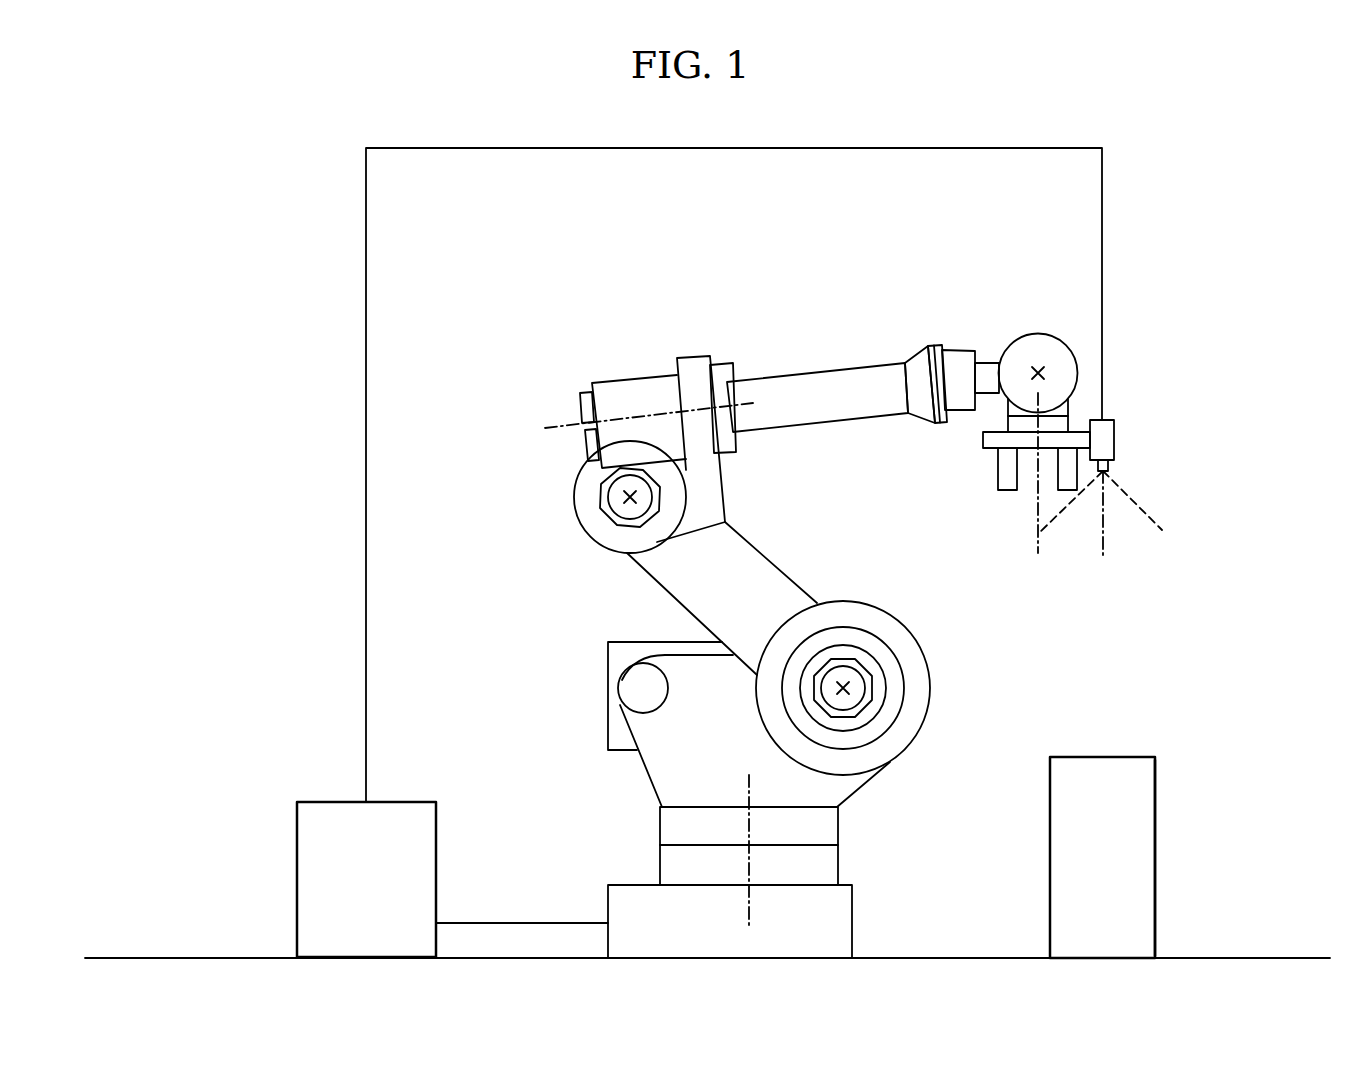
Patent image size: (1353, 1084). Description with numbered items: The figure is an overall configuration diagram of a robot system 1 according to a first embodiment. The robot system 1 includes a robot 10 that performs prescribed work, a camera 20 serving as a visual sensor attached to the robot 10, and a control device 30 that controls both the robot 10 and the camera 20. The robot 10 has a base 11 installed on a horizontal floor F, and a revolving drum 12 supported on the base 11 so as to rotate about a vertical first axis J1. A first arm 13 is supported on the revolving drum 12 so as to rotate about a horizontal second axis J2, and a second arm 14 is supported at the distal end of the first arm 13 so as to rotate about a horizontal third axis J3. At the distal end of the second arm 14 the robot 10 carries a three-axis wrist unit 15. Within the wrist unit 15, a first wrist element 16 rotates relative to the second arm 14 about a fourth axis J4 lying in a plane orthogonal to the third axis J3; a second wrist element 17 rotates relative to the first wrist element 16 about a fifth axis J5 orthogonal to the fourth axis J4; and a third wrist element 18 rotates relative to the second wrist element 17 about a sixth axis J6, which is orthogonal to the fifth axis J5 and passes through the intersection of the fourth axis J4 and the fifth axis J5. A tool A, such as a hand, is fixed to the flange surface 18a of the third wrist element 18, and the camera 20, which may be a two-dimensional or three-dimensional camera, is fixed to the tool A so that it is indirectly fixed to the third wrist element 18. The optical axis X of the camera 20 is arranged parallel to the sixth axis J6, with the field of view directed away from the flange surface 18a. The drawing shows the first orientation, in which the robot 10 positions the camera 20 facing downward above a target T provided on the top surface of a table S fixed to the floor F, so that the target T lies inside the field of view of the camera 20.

The robot system 1 is at (1150, 311).
The robot 10 is at (486, 296).
The base 11 is at (852, 918).
The revolving drum 12 is at (620, 728).
The first arm 13 is at (790, 572).
The second arm 14 is at (695, 358).
The wrist unit 15 is at (903, 294).
The first wrist element 16 is at (815, 370).
The second wrist element 17 is at (1012, 338).
The third wrist element 18 is at (1070, 425).
The flange surface 18a is at (1025, 433).
The camera 20 is at (1114, 437).
The control device 30 is at (297, 873).
The first axis J1 is at (750, 831).
The second axis J2 is at (843, 688).
The third axis J3 is at (630, 497).
The fourth axis J4 is at (631, 425).
The fifth axis J5 is at (1038, 372).
The sixth axis J6 is at (1035, 492).
The tool A is at (983, 435).
The optical axis X is at (1103, 542).
The target T is at (1097, 757).
The table S is at (1155, 848).
The floor F is at (1003, 958).